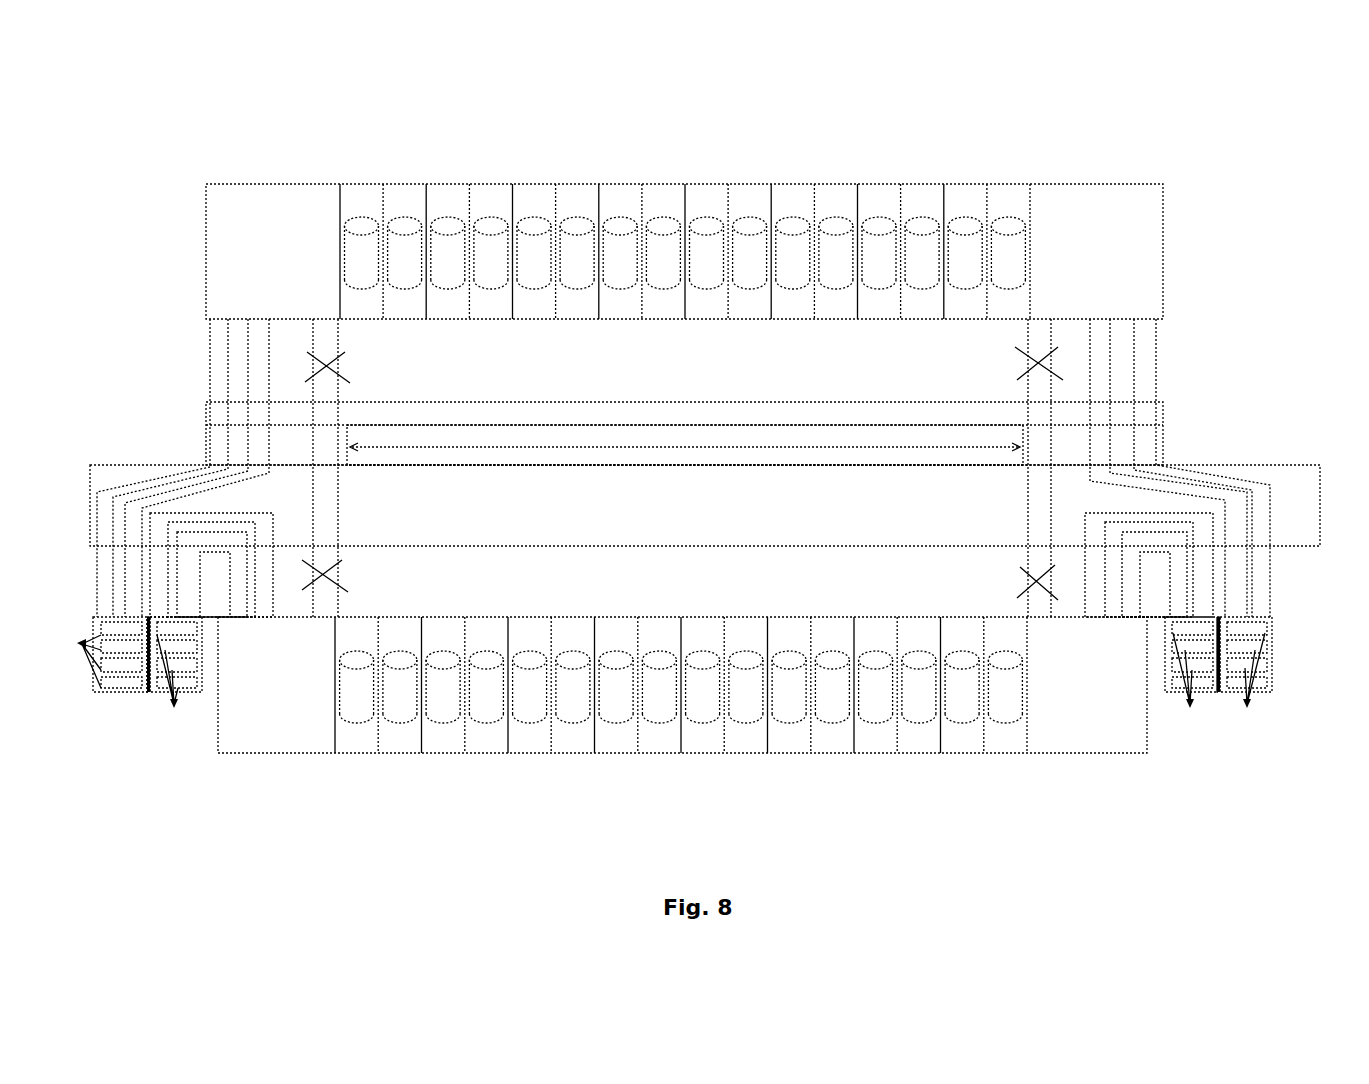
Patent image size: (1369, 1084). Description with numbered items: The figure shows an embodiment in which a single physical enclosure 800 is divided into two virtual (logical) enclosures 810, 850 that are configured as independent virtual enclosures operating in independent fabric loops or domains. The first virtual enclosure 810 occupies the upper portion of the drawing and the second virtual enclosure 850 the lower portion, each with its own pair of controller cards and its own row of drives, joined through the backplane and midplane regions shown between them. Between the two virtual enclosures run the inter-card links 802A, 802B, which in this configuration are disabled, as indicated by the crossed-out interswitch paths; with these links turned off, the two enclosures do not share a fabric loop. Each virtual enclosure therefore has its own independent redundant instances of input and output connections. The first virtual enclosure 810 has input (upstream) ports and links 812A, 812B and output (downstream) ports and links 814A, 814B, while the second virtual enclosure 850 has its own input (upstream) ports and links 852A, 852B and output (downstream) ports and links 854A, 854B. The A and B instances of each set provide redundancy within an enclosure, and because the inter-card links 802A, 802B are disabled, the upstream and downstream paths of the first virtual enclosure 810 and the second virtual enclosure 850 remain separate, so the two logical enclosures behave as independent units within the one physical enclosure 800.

The physical enclosure 800 is at (1092, 139).
The virtual enclosure 810 is at (1176, 253).
The virtual enclosure 850 is at (1186, 735).
The inter-card link 802A is at (340, 578).
The inter-card link 802B is at (1033, 362).
The input (upstream) port and link 812A is at (98, 581).
The output (downstream) port and link 814A is at (123, 558).
The input (upstream) port and link 852A is at (152, 601).
The output (downstream) port and link 854A is at (201, 593).
The input (upstream) port and link 812B is at (1268, 580).
The output (downstream) port and link 814B is at (1242, 558).
The input (upstream) port and link 852B is at (1210, 600).
The output (downstream) port and link 854B is at (1165, 590).